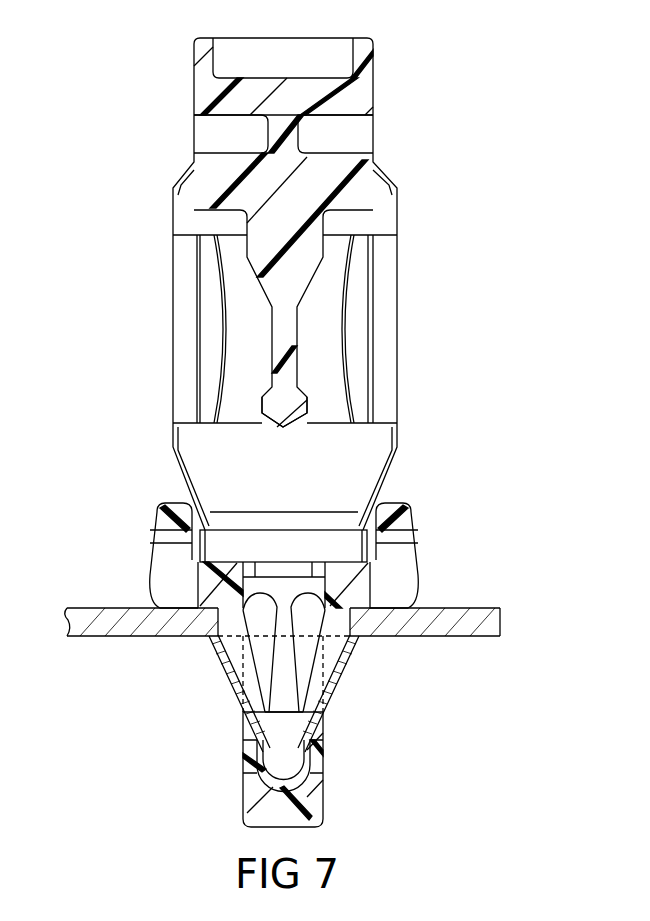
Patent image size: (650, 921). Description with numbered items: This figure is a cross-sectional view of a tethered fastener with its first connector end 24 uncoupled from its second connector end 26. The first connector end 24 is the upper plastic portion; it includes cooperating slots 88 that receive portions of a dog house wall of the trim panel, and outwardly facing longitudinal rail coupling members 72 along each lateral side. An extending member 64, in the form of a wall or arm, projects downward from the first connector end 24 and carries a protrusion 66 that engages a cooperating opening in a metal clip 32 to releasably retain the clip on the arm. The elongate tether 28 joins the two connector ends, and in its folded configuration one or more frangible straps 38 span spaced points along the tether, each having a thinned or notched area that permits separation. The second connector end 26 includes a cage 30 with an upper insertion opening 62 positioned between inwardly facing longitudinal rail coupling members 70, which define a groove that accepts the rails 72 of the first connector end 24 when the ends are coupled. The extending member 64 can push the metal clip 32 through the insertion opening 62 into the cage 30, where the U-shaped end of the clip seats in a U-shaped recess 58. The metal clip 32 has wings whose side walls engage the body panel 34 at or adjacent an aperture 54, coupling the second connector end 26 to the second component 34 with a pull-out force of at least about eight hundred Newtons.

The first connector end 24 is at (383, 75).
The cooperating slots 88 is at (218, 135).
The longitudinal rail coupling members 72 is at (183, 193).
The extending member 64 is at (283, 330).
The elongate tether 28 is at (317, 337).
The protrusion 66 is at (268, 402).
The frangible strap 38 is at (382, 362).
The longitudinal rail coupling members 70 is at (177, 500).
The second connector end 26 is at (128, 578).
The upper insertion opening 62 is at (320, 587).
The second component 34 is at (490, 630).
The aperture 54 is at (350, 620).
The metal clip 32 is at (226, 680).
The U-shaped recess 58 is at (320, 772).
The cage 30 is at (230, 777).